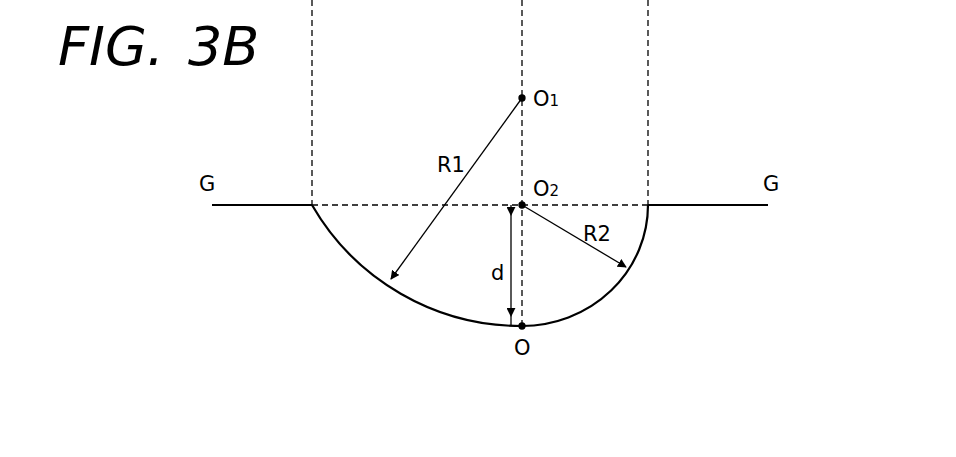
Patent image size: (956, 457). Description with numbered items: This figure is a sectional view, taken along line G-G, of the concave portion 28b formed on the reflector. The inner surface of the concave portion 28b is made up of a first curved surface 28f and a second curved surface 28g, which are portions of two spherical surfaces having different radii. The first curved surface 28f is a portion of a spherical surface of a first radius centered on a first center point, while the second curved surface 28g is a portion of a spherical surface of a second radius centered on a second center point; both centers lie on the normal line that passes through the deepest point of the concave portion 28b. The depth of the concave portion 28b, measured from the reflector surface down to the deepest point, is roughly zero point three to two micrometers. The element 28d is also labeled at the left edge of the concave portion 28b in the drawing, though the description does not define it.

The groove edge corner 28d is at (312, 205).
The first curved surface 28f is at (344, 247).
The second curved surface 28g is at (643, 237).
The concave portion 28b is at (666, 187).